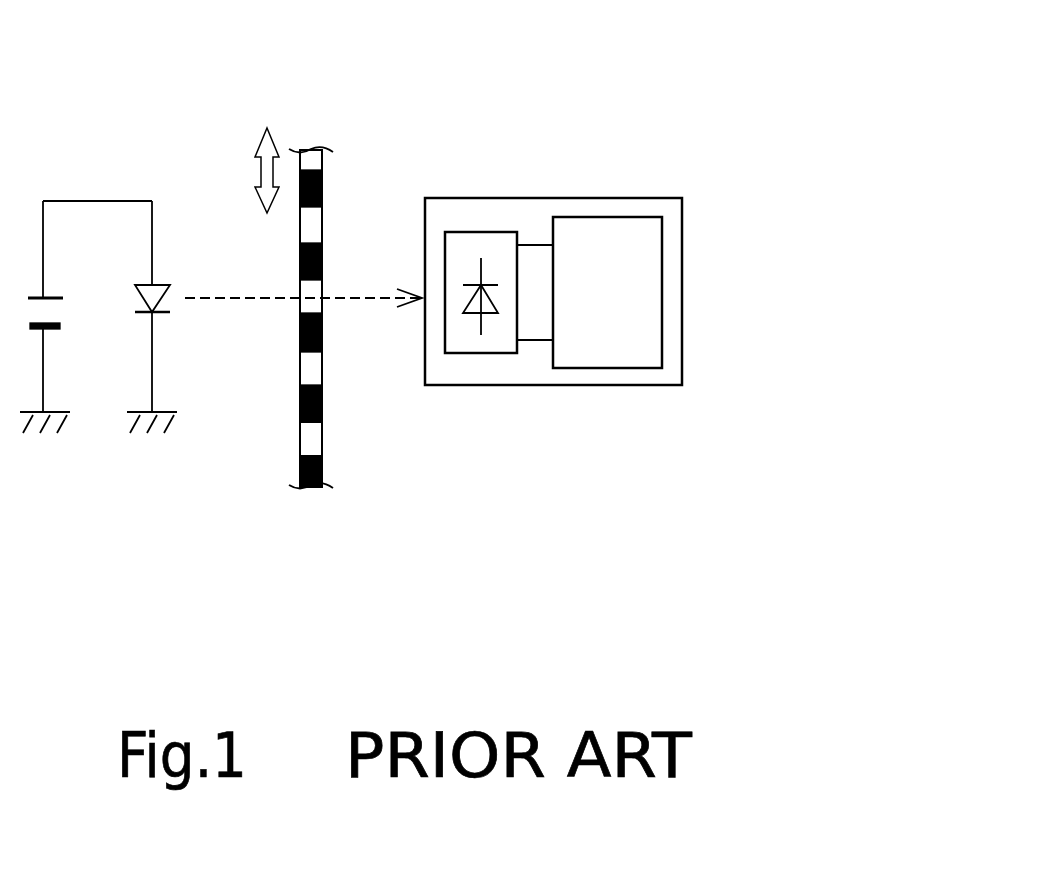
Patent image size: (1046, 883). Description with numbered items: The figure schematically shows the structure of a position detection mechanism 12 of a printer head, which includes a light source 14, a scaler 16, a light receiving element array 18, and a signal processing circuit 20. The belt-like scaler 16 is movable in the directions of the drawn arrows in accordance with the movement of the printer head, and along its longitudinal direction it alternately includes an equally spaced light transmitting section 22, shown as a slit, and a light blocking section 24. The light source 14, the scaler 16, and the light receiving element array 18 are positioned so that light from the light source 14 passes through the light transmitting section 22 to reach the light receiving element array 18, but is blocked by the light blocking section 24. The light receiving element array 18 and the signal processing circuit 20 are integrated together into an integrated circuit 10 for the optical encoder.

The integrated circuit 10 is at (482, 385).
The position detection mechanism 12 is at (95, 41).
The light source 14 is at (160, 283).
The scaler 16 is at (313, 125).
The light receiving element array 18 is at (483, 232).
The signal processing circuit 20 is at (600, 217).
The light transmitting section (slit) 22 is at (322, 432).
The light blocking section 24 is at (302, 403).